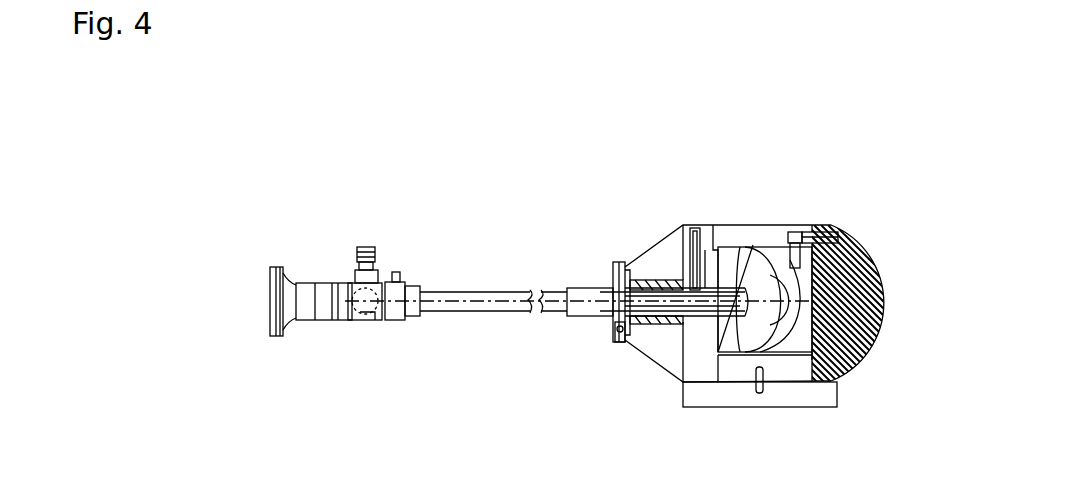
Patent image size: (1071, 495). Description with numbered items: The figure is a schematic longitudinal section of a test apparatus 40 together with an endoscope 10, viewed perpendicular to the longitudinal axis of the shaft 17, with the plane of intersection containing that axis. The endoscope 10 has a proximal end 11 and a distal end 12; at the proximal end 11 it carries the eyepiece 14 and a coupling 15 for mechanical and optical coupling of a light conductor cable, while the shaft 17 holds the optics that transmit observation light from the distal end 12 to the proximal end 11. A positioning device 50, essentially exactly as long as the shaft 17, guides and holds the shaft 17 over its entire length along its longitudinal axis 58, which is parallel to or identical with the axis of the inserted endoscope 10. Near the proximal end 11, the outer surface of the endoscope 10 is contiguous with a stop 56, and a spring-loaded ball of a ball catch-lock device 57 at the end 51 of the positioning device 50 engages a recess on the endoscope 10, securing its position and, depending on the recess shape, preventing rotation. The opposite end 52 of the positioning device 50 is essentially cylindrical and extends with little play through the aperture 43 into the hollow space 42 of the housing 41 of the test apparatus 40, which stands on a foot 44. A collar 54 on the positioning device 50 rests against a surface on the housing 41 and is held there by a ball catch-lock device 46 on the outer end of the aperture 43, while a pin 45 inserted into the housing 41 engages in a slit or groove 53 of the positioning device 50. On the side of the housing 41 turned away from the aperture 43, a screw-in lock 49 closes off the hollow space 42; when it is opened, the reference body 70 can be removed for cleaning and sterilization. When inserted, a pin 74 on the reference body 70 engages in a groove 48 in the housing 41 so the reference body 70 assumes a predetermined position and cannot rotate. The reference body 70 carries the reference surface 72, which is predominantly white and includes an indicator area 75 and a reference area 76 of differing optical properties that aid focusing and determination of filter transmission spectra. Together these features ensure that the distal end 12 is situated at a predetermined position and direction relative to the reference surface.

The endoscope 10 is at (300, 191).
The proximal end 11 is at (313, 353).
The distal end 12 is at (733, 335).
The eyepiece 14 is at (278, 267).
The coupling 15 is at (363, 247).
The shaft 17 is at (660, 316).
The test apparatus 40 is at (721, 124).
The housing 41 is at (805, 232).
The hollow space 42 is at (725, 246).
The aperture 43 is at (662, 282).
The foot 44 is at (742, 398).
The pin 45 is at (703, 226).
The ball catch-lock device 46 is at (615, 333).
The groove 48 is at (822, 232).
The screw-in lock 49 is at (847, 380).
The positioning device 50 is at (528, 222).
The end of the positioning device 51 is at (436, 261).
The end of the positioning device 52 is at (712, 332).
The groove 53 is at (696, 290).
The collar 54 is at (614, 268).
The stop 56 is at (380, 320).
The ball catch-lock device 57 is at (398, 280).
The longitudinal axis 58 is at (444, 311).
The reference body 70 is at (743, 352).
The reference surface 72 is at (752, 258).
The pin 74 is at (826, 230).
The indicator area 75 is at (772, 330).
The reference area 76 is at (800, 325).